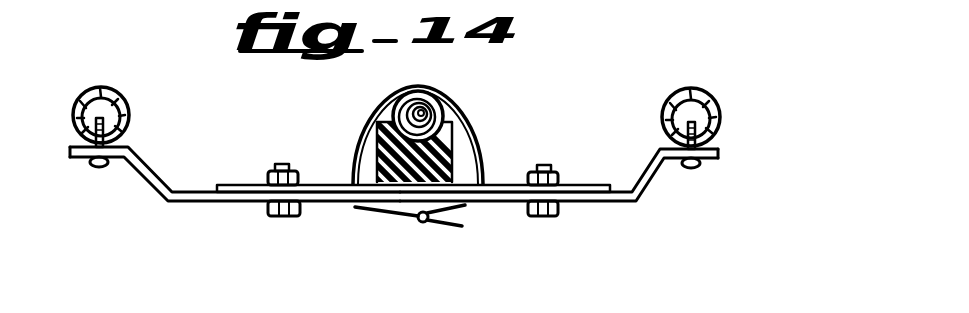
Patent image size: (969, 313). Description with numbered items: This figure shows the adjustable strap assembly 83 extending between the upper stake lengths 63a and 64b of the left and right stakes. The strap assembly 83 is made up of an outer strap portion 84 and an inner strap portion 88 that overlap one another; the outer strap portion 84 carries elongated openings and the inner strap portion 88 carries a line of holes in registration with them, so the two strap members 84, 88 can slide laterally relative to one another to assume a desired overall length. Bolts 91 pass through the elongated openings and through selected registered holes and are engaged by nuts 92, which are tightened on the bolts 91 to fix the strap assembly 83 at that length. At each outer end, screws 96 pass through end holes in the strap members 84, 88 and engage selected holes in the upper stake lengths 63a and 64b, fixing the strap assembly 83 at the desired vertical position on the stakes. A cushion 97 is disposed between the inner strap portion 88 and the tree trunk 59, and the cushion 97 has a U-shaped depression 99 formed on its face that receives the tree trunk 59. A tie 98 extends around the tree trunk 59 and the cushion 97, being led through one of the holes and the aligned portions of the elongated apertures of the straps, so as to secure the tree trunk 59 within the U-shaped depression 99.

The upper stake length 63a is at (124, 99).
The upper stake length 64b is at (712, 107).
The screw 96 is at (96, 163).
The outer strap portion 84 is at (165, 200).
The inner strap portion 88 is at (640, 186).
The adjustable strap assembly 83 is at (280, 239).
The nut 92 is at (272, 178).
The bolt 91 is at (288, 215).
The tree trunk 59 is at (432, 93).
The cushion 97 is at (440, 158).
The tie 98 is at (403, 87).
The U-shaped depression 99 is at (392, 104).